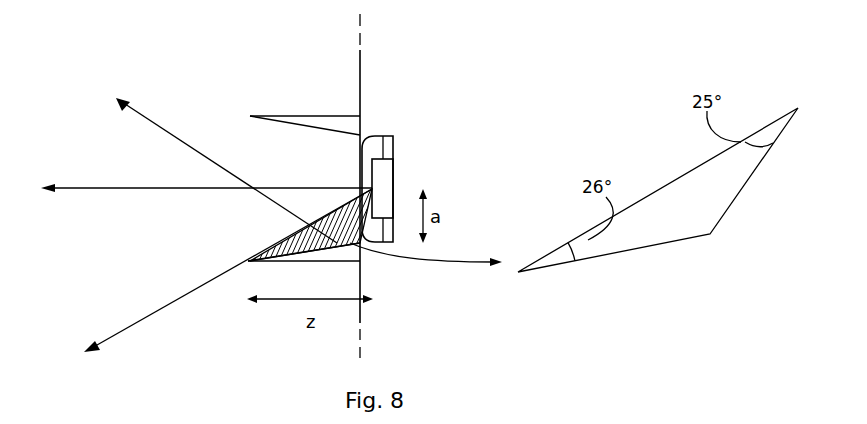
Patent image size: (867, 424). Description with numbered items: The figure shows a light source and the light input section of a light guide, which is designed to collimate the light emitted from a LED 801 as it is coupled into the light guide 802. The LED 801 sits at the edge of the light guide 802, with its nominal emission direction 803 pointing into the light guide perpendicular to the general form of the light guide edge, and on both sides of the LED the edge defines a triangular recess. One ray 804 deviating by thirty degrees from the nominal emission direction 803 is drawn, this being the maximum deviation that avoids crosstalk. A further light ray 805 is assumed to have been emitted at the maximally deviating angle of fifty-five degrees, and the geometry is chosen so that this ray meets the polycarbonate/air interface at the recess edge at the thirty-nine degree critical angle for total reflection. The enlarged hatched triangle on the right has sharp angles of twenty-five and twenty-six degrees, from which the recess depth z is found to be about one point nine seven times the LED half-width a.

The LED 801 is at (396, 137).
The light guide 802 is at (351, 93).
The nominal emission direction 803 is at (108, 188).
The ray deviating by 30 degrees 804 is at (146, 317).
The light ray 805 is at (167, 131).